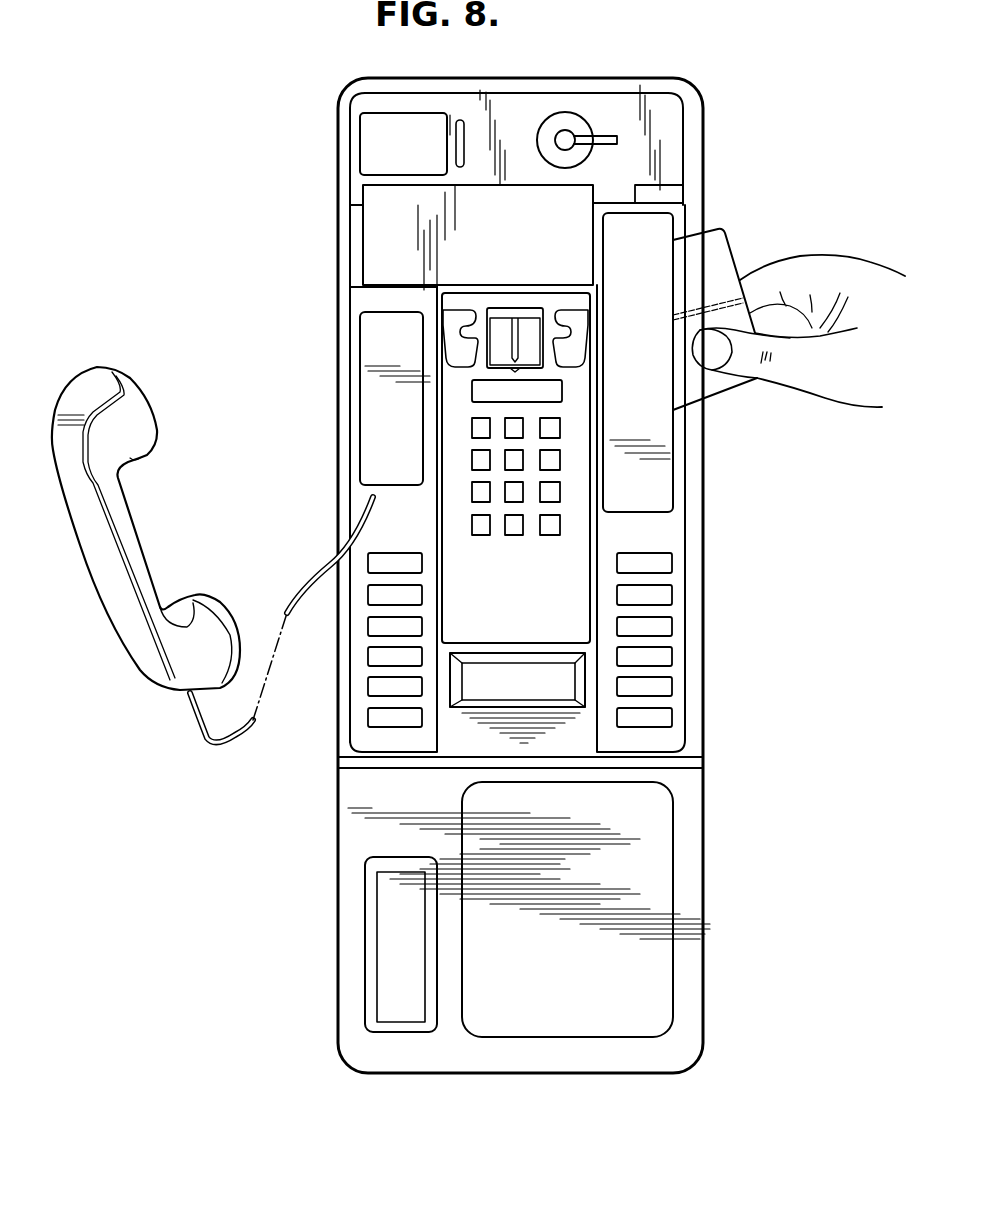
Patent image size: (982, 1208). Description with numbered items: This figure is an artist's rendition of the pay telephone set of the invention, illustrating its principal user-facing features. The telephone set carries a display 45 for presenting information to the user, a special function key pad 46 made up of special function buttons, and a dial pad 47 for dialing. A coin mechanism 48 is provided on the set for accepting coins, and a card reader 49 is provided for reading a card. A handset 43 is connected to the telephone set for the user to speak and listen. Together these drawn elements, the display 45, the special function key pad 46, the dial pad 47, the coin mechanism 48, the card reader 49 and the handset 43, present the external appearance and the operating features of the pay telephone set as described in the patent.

The handset 43 is at (140, 547).
The display 45 is at (498, 686).
The special function key pad 46 is at (608, 579).
The dial pad 47 is at (568, 454).
The coin mechanism 48 is at (480, 120).
The card reader 49 is at (689, 219).